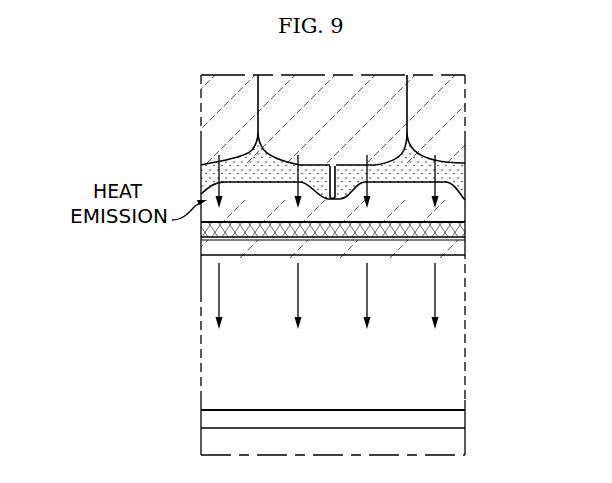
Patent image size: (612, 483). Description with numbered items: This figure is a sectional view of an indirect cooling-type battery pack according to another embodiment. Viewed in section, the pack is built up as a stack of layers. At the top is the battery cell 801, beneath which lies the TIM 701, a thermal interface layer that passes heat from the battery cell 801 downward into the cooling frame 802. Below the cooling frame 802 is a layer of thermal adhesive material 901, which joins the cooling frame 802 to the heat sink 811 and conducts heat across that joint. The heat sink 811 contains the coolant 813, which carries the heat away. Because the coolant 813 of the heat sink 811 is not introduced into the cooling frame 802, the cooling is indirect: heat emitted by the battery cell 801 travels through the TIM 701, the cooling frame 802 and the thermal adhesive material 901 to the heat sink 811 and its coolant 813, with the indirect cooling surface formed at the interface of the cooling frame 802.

The battery cell 801 is at (450, 104).
The TIM 701 is at (452, 170).
The cooling frame 802 is at (450, 207).
The thermal adhesive material 901 is at (450, 236).
The coolant 813 is at (450, 335).
The heat sink 811 is at (450, 422).